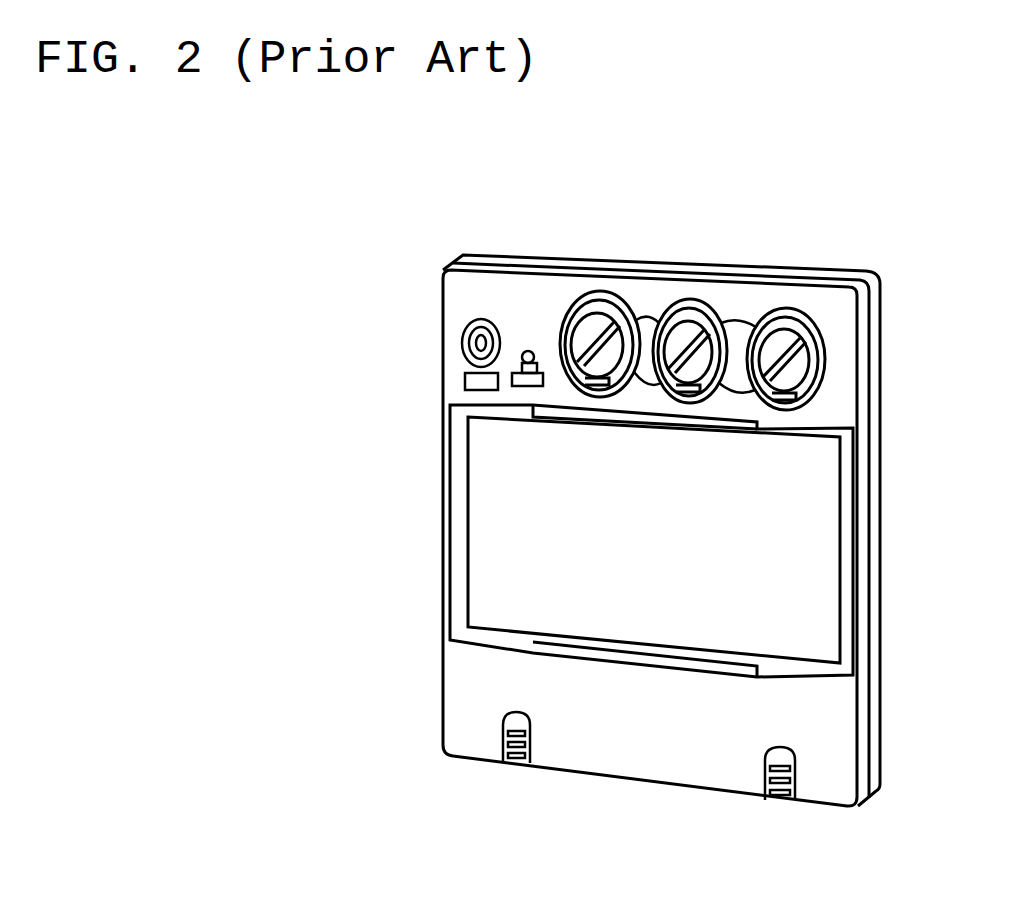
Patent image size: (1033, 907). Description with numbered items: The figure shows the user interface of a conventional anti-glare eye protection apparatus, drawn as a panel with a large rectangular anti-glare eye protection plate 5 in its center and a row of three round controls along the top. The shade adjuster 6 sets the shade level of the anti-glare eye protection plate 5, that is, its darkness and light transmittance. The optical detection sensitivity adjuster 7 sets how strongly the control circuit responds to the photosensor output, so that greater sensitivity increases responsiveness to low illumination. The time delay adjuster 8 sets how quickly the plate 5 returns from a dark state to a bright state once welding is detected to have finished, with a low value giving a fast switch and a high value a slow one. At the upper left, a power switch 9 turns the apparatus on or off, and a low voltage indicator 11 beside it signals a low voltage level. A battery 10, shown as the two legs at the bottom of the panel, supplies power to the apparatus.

The anti-glare eye protection plate 5 is at (493, 472).
The shade adjuster 6 is at (602, 303).
The optical detection sensitivity adjuster 7 is at (694, 313).
The time delay adjuster 8 is at (806, 320).
The power switch 9 is at (465, 328).
The battery 10 is at (772, 797).
The low voltage indicator 11 is at (528, 350).